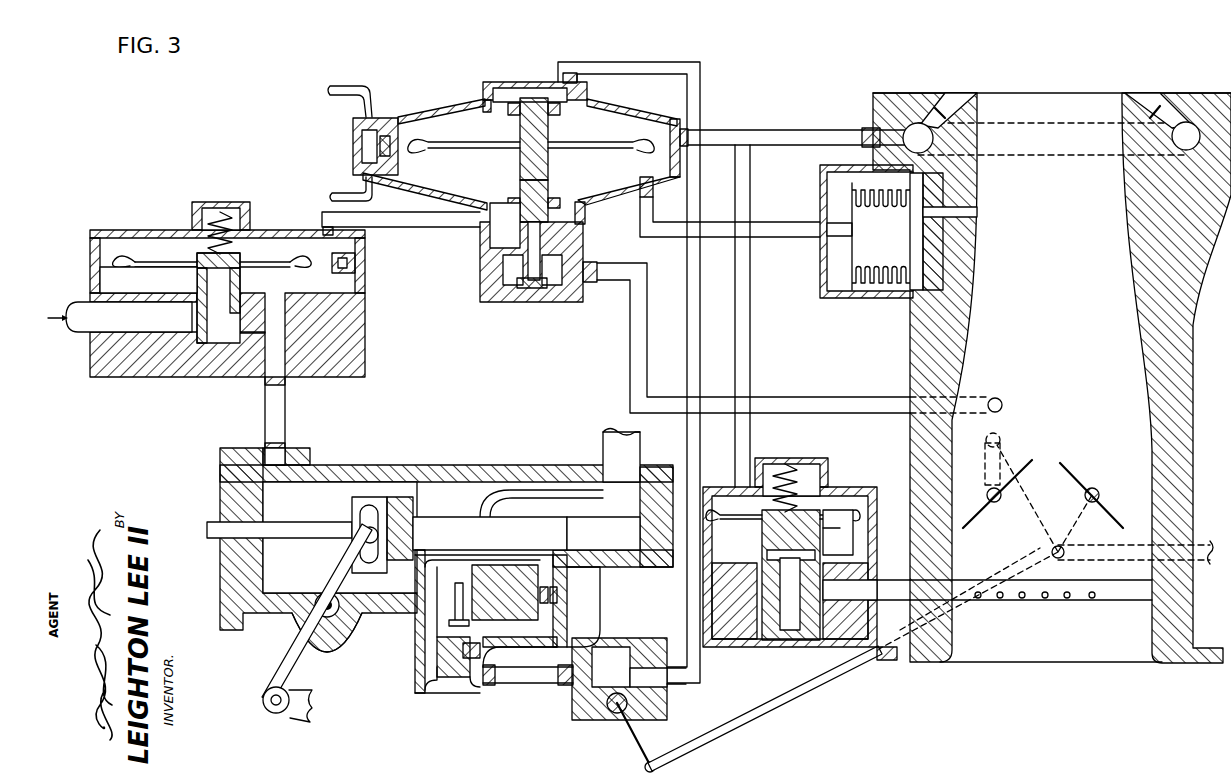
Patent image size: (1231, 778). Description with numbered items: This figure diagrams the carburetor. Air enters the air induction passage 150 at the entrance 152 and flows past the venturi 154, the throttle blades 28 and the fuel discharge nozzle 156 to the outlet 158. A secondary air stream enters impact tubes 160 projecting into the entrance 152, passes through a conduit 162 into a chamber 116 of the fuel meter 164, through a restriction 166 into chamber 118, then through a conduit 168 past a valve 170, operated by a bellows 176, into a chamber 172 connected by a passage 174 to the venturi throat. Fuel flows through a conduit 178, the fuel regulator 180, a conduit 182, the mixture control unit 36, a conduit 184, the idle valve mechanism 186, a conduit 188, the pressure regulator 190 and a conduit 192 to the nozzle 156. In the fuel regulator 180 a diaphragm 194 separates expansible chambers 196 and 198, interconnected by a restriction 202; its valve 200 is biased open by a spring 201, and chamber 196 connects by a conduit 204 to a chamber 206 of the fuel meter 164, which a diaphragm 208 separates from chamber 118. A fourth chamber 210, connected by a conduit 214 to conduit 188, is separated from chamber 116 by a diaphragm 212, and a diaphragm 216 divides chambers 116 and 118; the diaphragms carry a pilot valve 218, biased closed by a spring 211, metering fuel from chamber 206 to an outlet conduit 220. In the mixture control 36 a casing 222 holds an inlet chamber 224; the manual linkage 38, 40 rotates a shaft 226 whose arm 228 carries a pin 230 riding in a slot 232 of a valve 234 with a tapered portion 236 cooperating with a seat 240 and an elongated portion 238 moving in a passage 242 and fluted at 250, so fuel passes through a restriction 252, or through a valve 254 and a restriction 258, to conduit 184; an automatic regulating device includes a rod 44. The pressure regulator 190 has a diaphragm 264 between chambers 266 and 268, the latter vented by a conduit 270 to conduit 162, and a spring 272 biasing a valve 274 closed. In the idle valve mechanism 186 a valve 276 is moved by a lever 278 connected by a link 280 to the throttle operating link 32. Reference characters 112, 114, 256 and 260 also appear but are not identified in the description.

The throttle blades 28 is at (1060, 463).
The throttle operating link 32 is at (1211, 565).
The mixture control unit 36 is at (482, 442).
The manual mixture control link 38 is at (306, 676).
The manual operating linkage 40 is at (297, 720).
The rod 44 is at (606, 452).
The inlet tube 112 is at (352, 87).
The outlet tube 114 is at (337, 192).
The chamber 116 is at (484, 137).
The chamber 118 is at (484, 175).
The air induction passage 150 is at (908, 378).
The air entrance 152 is at (1073, 111).
The venturi 154 is at (976, 210).
The fuel discharge nozzle 156 is at (1112, 593).
The outlet 158 is at (1053, 654).
The impact tubes 160 is at (940, 102).
The conduit 162 is at (813, 124).
The fuel meter 164 is at (467, 88).
The restriction 166 is at (355, 150).
The conduit 168 is at (784, 226).
The valve 170 is at (822, 226).
The chamber 172 is at (827, 266).
The passage 174 is at (978, 228).
The bellows 176 is at (856, 294).
The conduit 178 is at (79, 333).
The fuel regulator 180 is at (128, 397).
The conduit 182 is at (286, 410).
The conduit 184 is at (530, 684).
The idle valve mechanism 186 is at (593, 721).
The conduit 188 is at (692, 674).
The pressure regulator 190 is at (788, 652).
The conduit 192 is at (888, 578).
The diaphragm 194 is at (130, 264).
The expansible chamber 196 is at (182, 257).
The expansible chamber 198 is at (182, 295).
The valve 200 is at (222, 346).
The spring 201 is at (227, 212).
The restriction 202 is at (355, 274).
The conduit 204 is at (463, 226).
The chamber 206 is at (500, 258).
The diaphragm 208 is at (555, 204).
The fourth chamber 210 is at (498, 86).
The spring 211 is at (564, 80).
The diaphragm 212 is at (561, 108).
The conduit 214 is at (702, 89).
The diaphragm 216 is at (633, 150).
The pilot valve 218 is at (553, 226).
The outlet conduit 220 is at (598, 284).
The casing 222 is at (405, 470).
The inlet chamber 224 is at (321, 504).
The shaft 226 is at (348, 618).
The arm 228 is at (336, 598).
The pin 230 is at (366, 512).
The slot 232 is at (368, 498).
The valve 234 is at (436, 498).
The tapered valve portion 236 is at (415, 622).
The elongated valve portion 238 is at (532, 540).
The seat 240 is at (446, 568).
The passage 242 is at (619, 540).
The flute 250 is at (480, 510).
The restriction 252 is at (440, 672).
The valve 254 is at (468, 624).
The passage 256 is at (578, 617).
The restriction 258 is at (474, 688).
The housing 260 is at (580, 578).
The diaphragm 264 is at (783, 522).
The chamber 266 is at (770, 575).
The chamber 268 is at (829, 502).
The conduit 270 is at (752, 366).
The spring 272 is at (791, 460).
The valve 274 is at (812, 652).
The idle valve 276 is at (579, 690).
The lever 278 is at (645, 746).
The link 280 is at (753, 722).